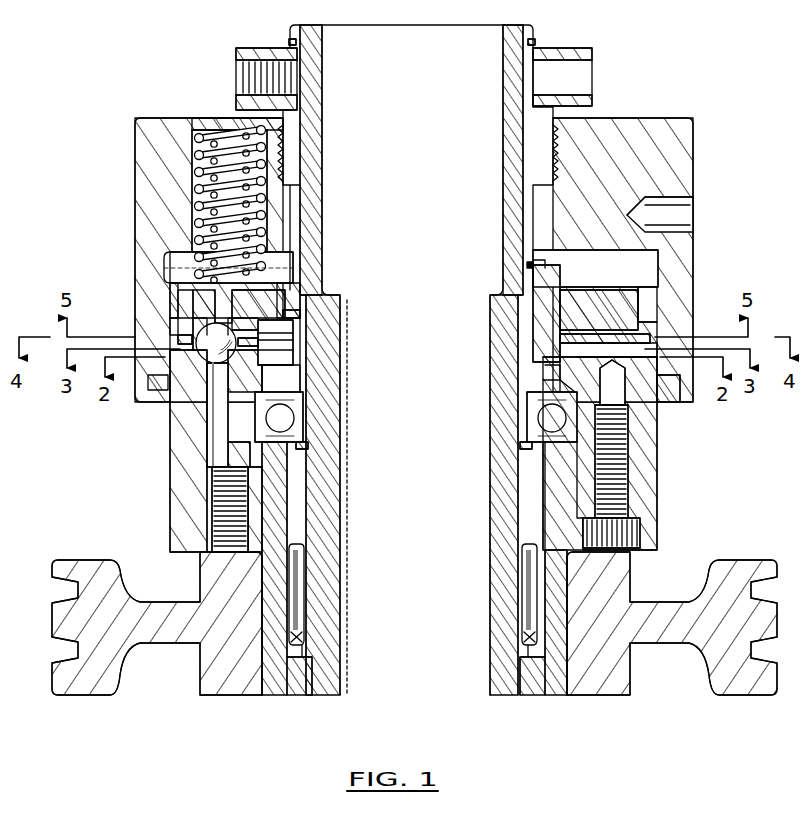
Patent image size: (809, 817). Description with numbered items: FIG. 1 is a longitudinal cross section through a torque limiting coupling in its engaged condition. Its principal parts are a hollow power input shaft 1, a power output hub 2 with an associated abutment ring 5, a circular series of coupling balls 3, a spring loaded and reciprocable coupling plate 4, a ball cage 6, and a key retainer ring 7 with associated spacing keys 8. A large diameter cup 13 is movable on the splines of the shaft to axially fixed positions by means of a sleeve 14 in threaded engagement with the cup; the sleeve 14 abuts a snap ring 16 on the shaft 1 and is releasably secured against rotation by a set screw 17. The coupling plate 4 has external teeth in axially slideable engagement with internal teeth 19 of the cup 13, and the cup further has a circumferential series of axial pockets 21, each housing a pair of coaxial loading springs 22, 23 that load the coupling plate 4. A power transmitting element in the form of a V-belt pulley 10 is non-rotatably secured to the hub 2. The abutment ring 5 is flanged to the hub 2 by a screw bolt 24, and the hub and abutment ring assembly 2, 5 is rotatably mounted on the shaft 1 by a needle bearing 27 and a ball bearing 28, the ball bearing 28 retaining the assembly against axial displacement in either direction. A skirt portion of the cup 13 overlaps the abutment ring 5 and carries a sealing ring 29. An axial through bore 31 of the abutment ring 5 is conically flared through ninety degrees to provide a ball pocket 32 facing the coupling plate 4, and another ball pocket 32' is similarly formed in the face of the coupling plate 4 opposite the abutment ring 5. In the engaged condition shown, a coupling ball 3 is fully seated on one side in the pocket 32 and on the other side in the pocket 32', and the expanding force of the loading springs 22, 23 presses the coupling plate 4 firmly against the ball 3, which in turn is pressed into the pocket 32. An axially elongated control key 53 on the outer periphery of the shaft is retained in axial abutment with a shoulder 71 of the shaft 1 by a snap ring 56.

The hollow power input shaft 1 is at (333, 690).
The power output hub 2 is at (284, 690).
The coupling ball 3 is at (228, 360).
The coupling plate 4 is at (245, 308).
The abutment ring 5 is at (186, 456).
The ball cage 6 is at (178, 337).
The key retainer ring 7 is at (548, 368).
The spacing keys 8 is at (285, 329).
The V-belt pulley 10 is at (76, 698).
The cup 13 is at (150, 196).
The sleeve 14 is at (292, 117).
The snap ring 16 is at (290, 37).
The set screw 17 is at (252, 78).
The internal teeth 19 is at (186, 270).
The axial pockets 21 is at (193, 180).
The loading spring 22 is at (196, 182).
The loading spring 23 is at (212, 137).
The screw bolt 24 is at (620, 511).
The needle bearing 27 is at (298, 580).
The ball bearing 28 is at (540, 418).
The sealing ring 29 is at (672, 388).
The axial through bore 31 is at (216, 420).
The ball pocket 32 is at (216, 408).
The ball pocket 32' is at (175, 309).
The control key 53 is at (557, 276).
The snap ring 56 is at (528, 266).
The shoulder 71 is at (290, 378).